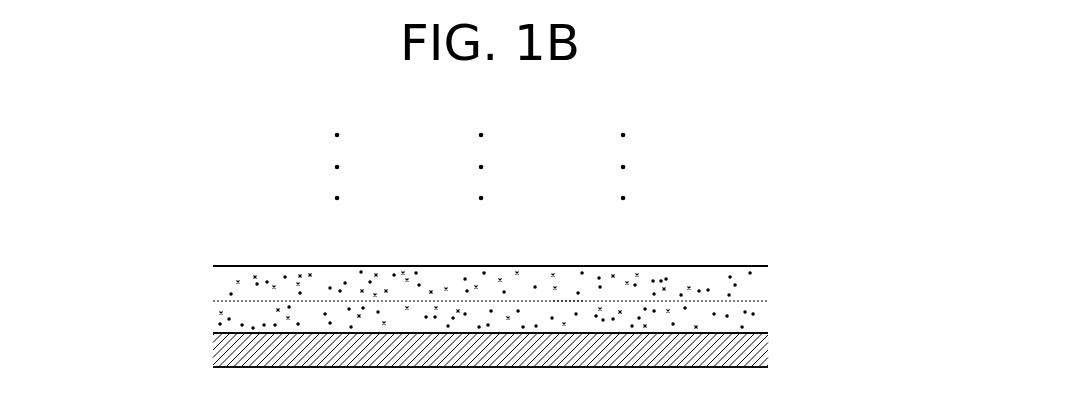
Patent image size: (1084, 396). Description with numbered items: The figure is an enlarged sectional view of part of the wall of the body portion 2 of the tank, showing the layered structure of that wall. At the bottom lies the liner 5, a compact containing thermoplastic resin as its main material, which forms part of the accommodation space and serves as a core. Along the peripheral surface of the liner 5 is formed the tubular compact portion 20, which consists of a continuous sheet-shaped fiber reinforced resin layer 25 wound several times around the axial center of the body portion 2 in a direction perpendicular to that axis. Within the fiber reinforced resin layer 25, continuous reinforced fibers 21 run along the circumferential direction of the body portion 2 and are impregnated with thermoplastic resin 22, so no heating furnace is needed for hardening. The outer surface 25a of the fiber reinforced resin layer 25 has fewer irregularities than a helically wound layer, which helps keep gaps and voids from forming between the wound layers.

The body portion 2 is at (834, 210).
The liner 5 is at (752, 353).
The tubular compact portion 20 is at (782, 118).
The reinforced fibers 21 is at (730, 277).
The thermoplastic resin 22 is at (563, 280).
The fiber reinforced resin layer 25 is at (213, 318).
The surface of the fiber reinforced resin layer 25a is at (417, 266).